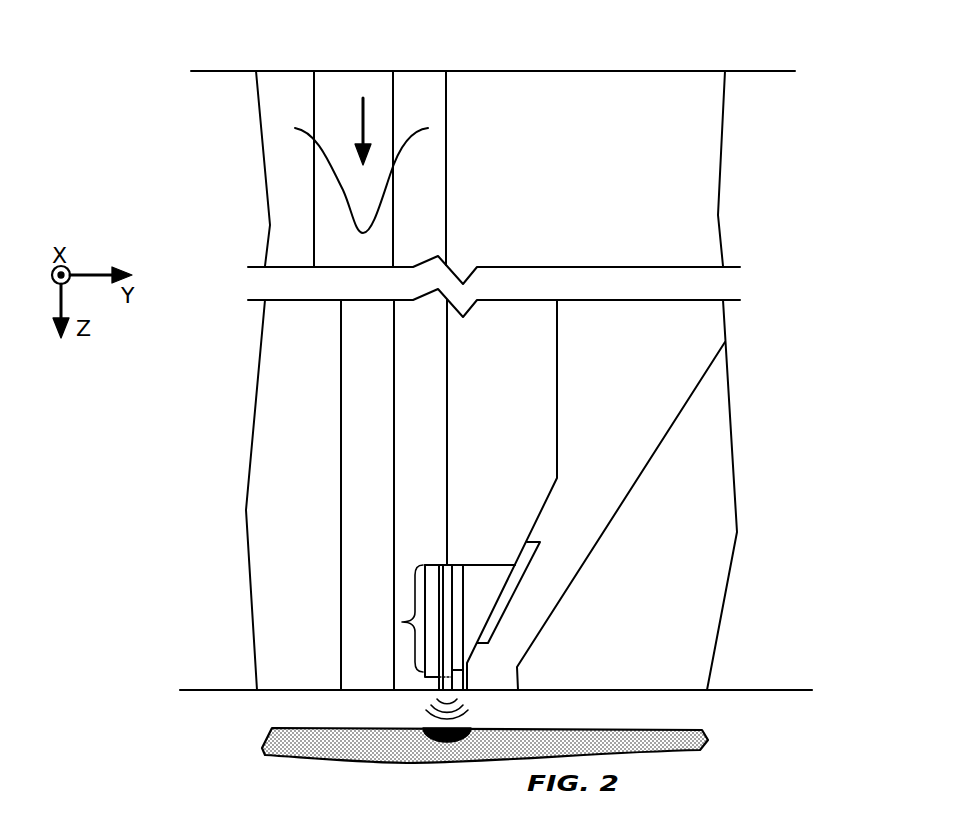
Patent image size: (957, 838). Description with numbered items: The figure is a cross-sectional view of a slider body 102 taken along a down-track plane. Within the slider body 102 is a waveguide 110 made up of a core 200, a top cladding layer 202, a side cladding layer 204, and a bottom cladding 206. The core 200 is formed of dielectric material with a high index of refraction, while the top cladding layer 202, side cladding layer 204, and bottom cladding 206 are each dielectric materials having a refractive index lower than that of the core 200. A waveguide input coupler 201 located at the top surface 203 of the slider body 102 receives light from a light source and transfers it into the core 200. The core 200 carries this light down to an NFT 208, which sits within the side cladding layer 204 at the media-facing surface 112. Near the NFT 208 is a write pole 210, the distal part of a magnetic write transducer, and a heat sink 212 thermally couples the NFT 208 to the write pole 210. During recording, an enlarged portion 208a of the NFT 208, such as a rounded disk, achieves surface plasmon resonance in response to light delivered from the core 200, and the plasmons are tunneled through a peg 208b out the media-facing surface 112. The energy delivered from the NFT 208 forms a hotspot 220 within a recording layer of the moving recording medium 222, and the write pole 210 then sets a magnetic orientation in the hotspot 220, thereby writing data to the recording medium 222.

The slider body 102 is at (224, 38).
The waveguide 110 is at (241, 180).
The media-facing surface 112 is at (800, 692).
The core 200 is at (382, 361).
The waveguide input coupler 201 is at (358, 78).
The top cladding layer 202 is at (526, 366).
The top surface 203 is at (760, 71).
The side cladding layer 204 is at (439, 356).
The bottom cladding 206 is at (268, 390).
The NFT 208 is at (429, 533).
The enlarged portion 208a is at (402, 622).
The peg 208b is at (437, 678).
The write pole 210 is at (521, 656).
The heat sink 212 is at (471, 573).
The hotspot 220 is at (447, 745).
The recording medium 222 is at (660, 728).